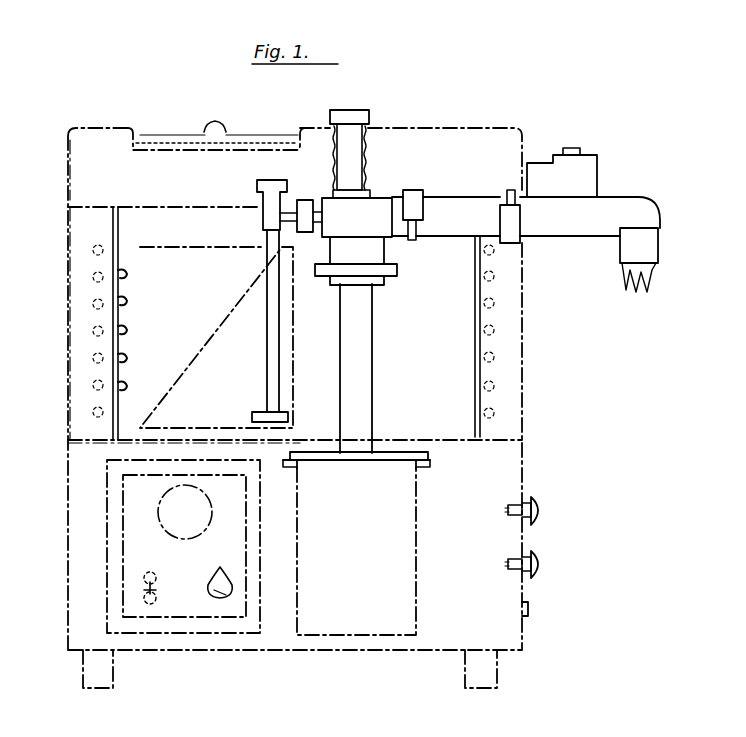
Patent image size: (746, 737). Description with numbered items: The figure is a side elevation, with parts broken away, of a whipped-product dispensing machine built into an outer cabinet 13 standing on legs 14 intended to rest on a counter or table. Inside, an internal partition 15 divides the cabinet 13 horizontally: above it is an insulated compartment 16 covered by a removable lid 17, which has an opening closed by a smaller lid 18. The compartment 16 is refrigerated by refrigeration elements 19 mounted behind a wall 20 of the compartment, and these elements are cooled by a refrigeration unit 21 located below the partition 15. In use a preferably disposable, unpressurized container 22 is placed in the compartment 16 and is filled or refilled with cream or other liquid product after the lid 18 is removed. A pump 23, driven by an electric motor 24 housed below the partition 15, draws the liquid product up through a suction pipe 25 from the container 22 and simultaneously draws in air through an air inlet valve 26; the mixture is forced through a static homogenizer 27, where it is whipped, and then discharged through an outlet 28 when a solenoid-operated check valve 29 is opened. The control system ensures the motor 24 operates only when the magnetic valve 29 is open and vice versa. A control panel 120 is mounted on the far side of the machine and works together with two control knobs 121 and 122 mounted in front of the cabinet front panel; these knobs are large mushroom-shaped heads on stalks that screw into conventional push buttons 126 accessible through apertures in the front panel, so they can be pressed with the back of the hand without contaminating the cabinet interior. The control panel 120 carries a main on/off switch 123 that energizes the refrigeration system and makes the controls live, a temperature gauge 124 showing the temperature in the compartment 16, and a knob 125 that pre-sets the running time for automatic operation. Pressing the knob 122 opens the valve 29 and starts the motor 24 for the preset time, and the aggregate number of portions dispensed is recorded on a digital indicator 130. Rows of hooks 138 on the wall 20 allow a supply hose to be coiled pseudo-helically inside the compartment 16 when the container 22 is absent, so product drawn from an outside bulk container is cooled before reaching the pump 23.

The outer cabinet 13 is at (527, 482).
The legs 14 is at (98, 688).
The internal partition 15 is at (430, 440).
The insulated compartment 16 is at (143, 226).
The removable lid 17 is at (98, 130).
The smaller lid 18 is at (157, 136).
The refrigeration elements 19 is at (92, 330).
The wall 20 is at (115, 398).
The refrigeration unit 21 is at (112, 557).
The container 22 is at (295, 384).
The pump 23 is at (380, 261).
The electric motor 24 is at (404, 550).
The suction pipe 25 is at (268, 331).
The air inlet valve 26 is at (356, 198).
The static homogenizer 27 is at (432, 200).
The outlet 28 is at (666, 279).
The solenoid-operated check valve 29 is at (588, 195).
The control panel 120 is at (190, 614).
The control knob 121 is at (545, 507).
The control knob 122 is at (545, 566).
The main on/off switch 123 is at (152, 592).
The temperature gauge 124 is at (172, 512).
The knob 125 is at (222, 597).
The push button 126 is at (512, 558).
The digital indicator 130 is at (528, 609).
The hooks 138 is at (120, 298).